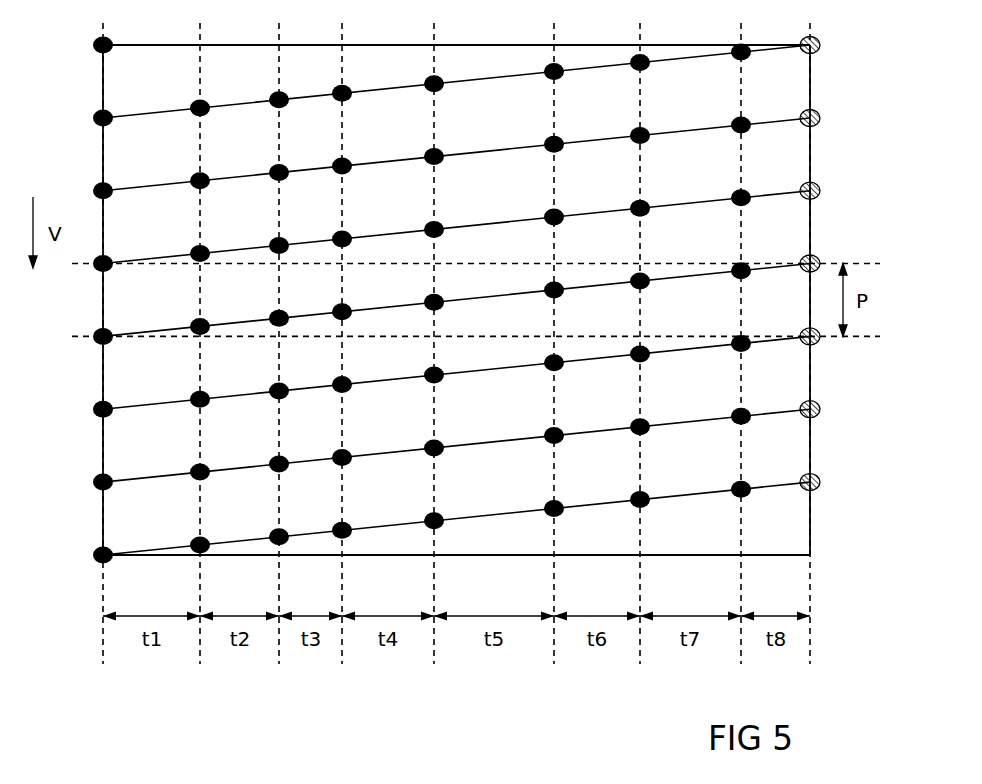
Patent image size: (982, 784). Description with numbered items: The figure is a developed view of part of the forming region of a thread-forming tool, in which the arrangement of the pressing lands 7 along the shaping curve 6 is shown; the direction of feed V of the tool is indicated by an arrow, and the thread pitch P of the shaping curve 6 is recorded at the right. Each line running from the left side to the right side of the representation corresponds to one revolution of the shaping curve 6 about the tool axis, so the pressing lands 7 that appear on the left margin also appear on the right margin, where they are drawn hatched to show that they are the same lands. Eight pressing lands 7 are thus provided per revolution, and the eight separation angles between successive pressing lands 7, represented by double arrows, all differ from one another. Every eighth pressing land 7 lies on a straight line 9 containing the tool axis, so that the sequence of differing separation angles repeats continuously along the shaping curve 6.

The shaping curve 6 is at (787, 484).
The pressing lands 7 is at (93, 478).
The straight line 9 is at (279, 653).